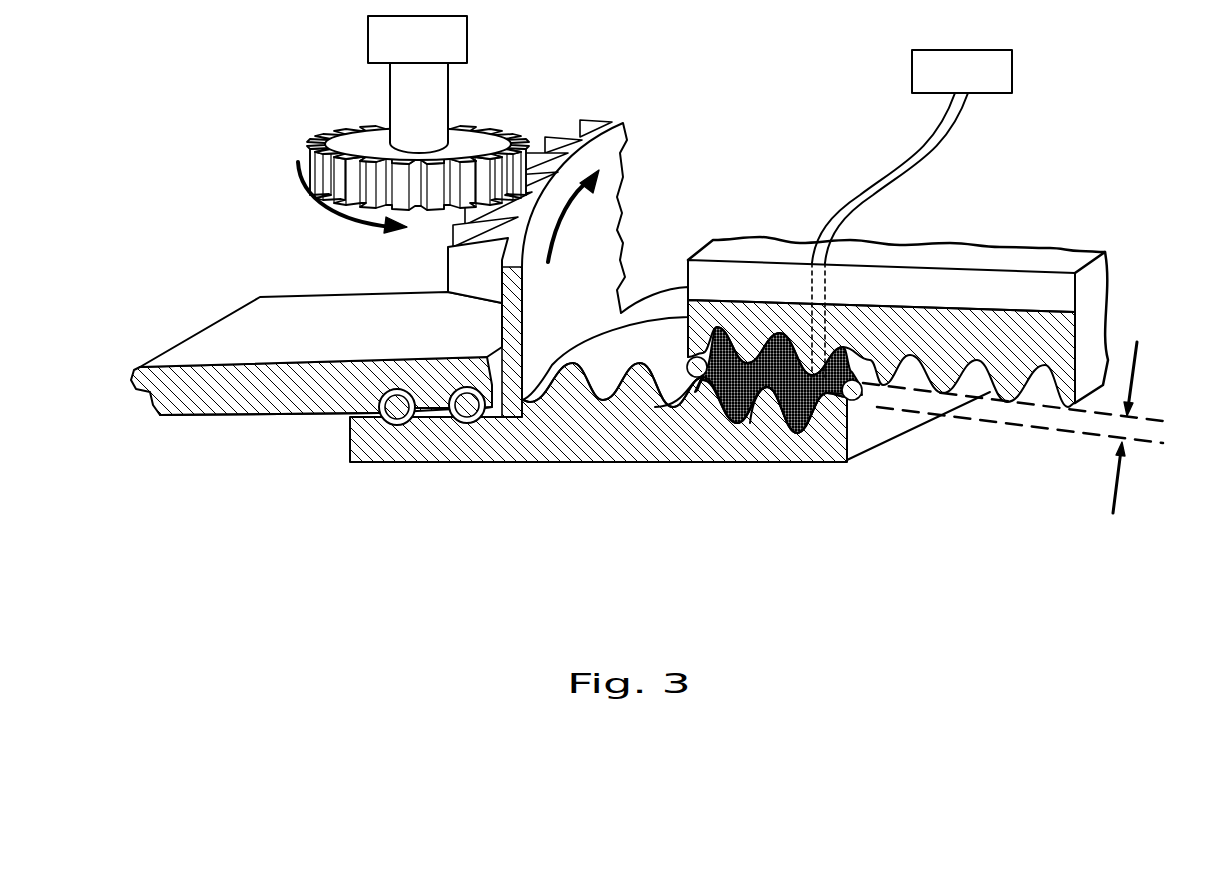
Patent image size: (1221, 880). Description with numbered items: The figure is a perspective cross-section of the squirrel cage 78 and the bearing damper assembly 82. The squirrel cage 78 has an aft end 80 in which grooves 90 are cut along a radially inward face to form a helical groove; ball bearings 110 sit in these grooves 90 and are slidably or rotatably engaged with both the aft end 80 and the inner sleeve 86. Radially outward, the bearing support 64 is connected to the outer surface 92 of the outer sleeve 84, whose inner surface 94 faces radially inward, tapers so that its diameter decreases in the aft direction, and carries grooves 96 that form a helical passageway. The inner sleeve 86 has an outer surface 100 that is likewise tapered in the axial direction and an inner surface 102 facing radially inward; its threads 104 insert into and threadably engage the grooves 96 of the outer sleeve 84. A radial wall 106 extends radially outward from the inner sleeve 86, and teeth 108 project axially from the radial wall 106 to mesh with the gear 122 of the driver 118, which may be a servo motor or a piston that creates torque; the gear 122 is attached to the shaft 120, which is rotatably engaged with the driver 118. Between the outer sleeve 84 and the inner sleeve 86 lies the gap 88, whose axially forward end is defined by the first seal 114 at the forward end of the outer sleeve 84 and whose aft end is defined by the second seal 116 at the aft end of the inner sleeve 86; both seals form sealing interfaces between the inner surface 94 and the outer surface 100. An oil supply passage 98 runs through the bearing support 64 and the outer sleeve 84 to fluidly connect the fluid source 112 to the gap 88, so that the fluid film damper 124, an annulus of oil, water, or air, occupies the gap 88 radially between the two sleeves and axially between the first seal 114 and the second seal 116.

The bearing support 64 is at (1032, 270).
The squirrel cage 78 is at (222, 316).
The aft end 80 is at (275, 296).
The bearing damper assembly 82 is at (795, 143).
The outer sleeve 84 is at (930, 306).
The inner sleeve 86 is at (657, 462).
The gap 88 is at (1140, 380).
The grooves 90 is at (397, 388).
The outer surface 92 is at (983, 310).
The inner surface 94 is at (698, 356).
The grooves 96 is at (795, 345).
The oil supply passage 98 is at (805, 285).
The outer surface 100 is at (733, 425).
The inner surface 102 is at (588, 462).
The threads 104 is at (770, 392).
The radial wall 106 is at (623, 197).
The teeth 108 is at (565, 128).
The ball bearings 110 is at (397, 427).
The fluid source 112 is at (1013, 73).
The first seal 114 is at (690, 425).
The second seal 116 is at (860, 400).
The driver 118 is at (468, 35).
The shaft 120 is at (390, 90).
The gear 122 is at (312, 140).
The fluid film damper 124 is at (805, 420).